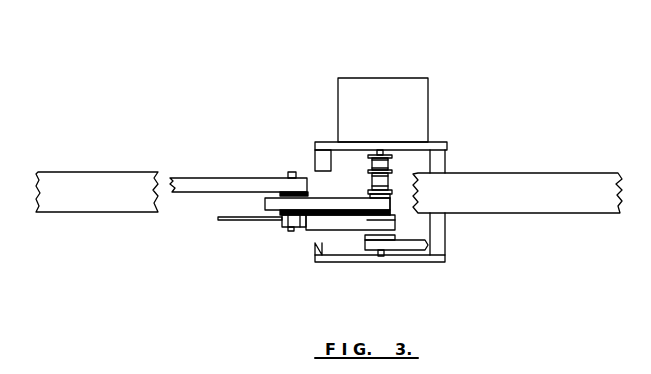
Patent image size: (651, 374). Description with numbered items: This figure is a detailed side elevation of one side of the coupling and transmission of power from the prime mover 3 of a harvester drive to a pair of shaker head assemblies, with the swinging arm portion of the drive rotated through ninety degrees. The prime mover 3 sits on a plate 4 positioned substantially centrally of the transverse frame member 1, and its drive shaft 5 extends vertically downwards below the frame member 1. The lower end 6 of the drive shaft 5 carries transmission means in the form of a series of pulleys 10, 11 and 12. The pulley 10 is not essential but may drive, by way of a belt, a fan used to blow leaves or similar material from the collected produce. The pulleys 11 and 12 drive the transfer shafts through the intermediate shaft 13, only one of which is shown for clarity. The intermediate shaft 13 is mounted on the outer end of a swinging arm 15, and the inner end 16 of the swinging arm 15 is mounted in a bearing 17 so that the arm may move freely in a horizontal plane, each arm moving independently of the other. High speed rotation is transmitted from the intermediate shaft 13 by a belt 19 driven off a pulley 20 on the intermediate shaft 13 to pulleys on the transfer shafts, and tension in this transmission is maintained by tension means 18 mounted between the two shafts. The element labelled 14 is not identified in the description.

The frame member 1 is at (533, 185).
The prime mover 3 is at (398, 92).
The plate 4 is at (440, 146).
The drive shaft 5 is at (382, 152).
The lower end of the drive shaft 6 is at (381, 262).
The pulley 10 is at (392, 163).
The pulley 11 is at (372, 186).
The pulley 12 is at (391, 206).
The intermediate shaft 13 is at (291, 173).
The block 14 is at (294, 230).
The swinging arm 15 is at (320, 223).
The inner end of the swinging arm 16 is at (367, 249).
The bearing 17 is at (367, 218).
The tension means 18 is at (240, 221).
The belt 19 is at (208, 186).
The pulley 20 is at (287, 177).